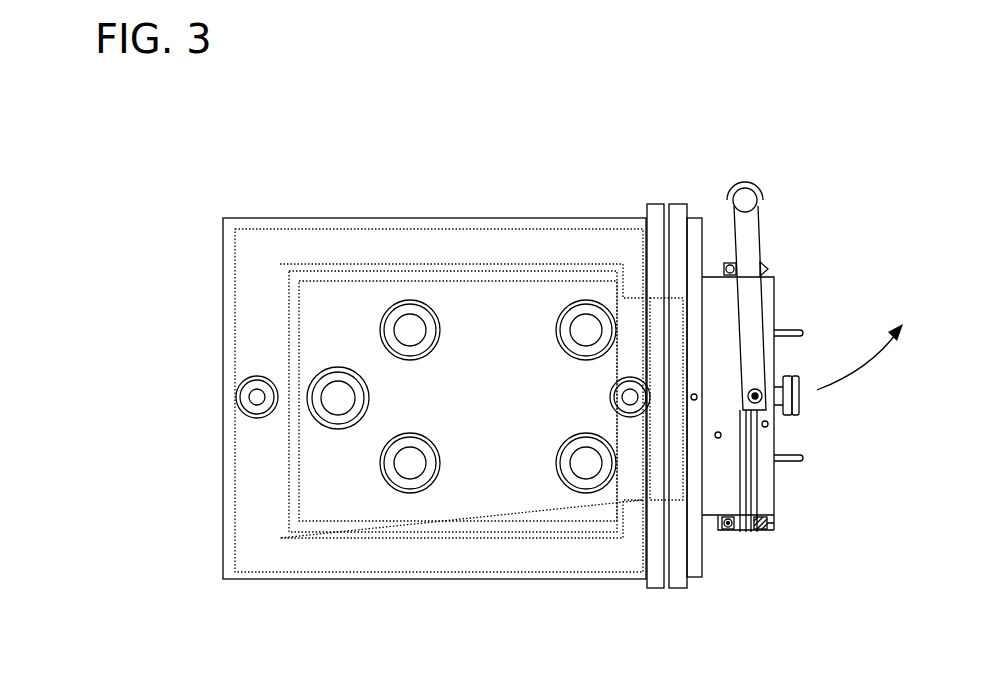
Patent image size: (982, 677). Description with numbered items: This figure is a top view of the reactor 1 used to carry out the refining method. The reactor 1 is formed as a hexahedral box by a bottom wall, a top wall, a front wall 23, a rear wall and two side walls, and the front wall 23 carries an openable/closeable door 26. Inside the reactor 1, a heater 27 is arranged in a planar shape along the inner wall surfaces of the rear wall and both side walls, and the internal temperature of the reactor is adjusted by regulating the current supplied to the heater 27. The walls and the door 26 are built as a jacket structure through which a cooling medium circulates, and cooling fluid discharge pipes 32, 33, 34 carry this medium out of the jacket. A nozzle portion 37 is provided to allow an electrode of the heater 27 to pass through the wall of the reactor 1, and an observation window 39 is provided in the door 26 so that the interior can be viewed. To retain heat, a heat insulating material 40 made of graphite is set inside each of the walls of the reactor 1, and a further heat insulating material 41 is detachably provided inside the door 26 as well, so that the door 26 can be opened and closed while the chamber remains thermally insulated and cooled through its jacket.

The reactor 1 is at (600, 178).
The front wall 23 is at (676, 589).
The door 26 is at (774, 292).
The heater 27 is at (332, 530).
The cooling fluid discharge pipe 32 is at (254, 404).
The cooling fluid discharge pipe 33 is at (694, 401).
The cooling fluid discharge pipe 34 is at (767, 427).
The nozzle portion 37 is at (413, 346).
The observation window 39 is at (800, 403).
The heat insulating material 40 is at (362, 245).
The heat insulating material 41 is at (676, 288).